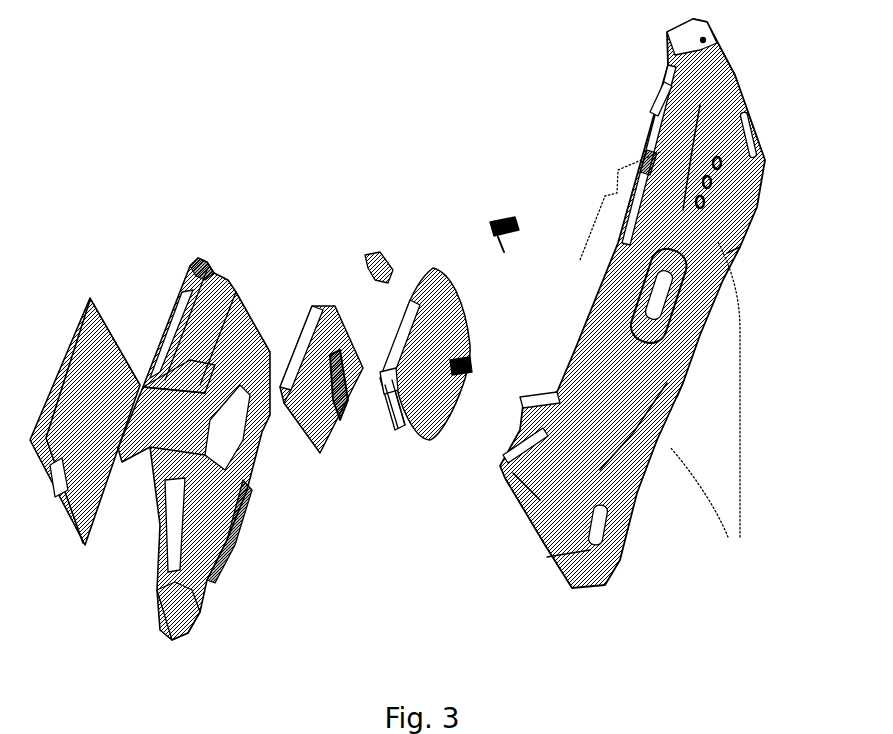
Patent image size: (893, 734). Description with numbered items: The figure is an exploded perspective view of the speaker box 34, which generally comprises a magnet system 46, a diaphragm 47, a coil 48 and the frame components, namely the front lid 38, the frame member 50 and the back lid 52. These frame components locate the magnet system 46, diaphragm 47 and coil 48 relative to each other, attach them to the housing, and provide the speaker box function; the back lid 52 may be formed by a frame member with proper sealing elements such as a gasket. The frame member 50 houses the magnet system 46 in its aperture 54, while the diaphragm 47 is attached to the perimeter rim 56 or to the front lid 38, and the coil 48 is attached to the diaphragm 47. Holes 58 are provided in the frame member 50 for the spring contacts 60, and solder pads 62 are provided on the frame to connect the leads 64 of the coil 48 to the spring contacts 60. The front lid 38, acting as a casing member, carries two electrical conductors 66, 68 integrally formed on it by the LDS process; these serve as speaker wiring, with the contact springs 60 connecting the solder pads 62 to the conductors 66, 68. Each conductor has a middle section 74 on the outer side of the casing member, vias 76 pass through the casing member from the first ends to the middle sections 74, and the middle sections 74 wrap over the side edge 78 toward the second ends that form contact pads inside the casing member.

The speaker box 34 is at (150, 58).
The front lid 38 is at (508, 495).
The magnet system 46 is at (336, 305).
The diaphragm 47 is at (423, 440).
The coil 48 is at (378, 440).
The frame member 50 is at (232, 262).
The back lid 52 is at (85, 298).
The aperture 54 is at (213, 353).
The perimeter rim 56 is at (223, 470).
The holes 58 is at (246, 252).
The spring contacts 60 is at (472, 364).
The solder pads 62 is at (303, 512).
The leads 64 is at (407, 290).
The electrical conductor 66 is at (603, 247).
The electrical conductor 68 is at (697, 110).
The middle section 74 is at (647, 173).
The vias 76 is at (727, 253).
The side edge 78 is at (673, 87).